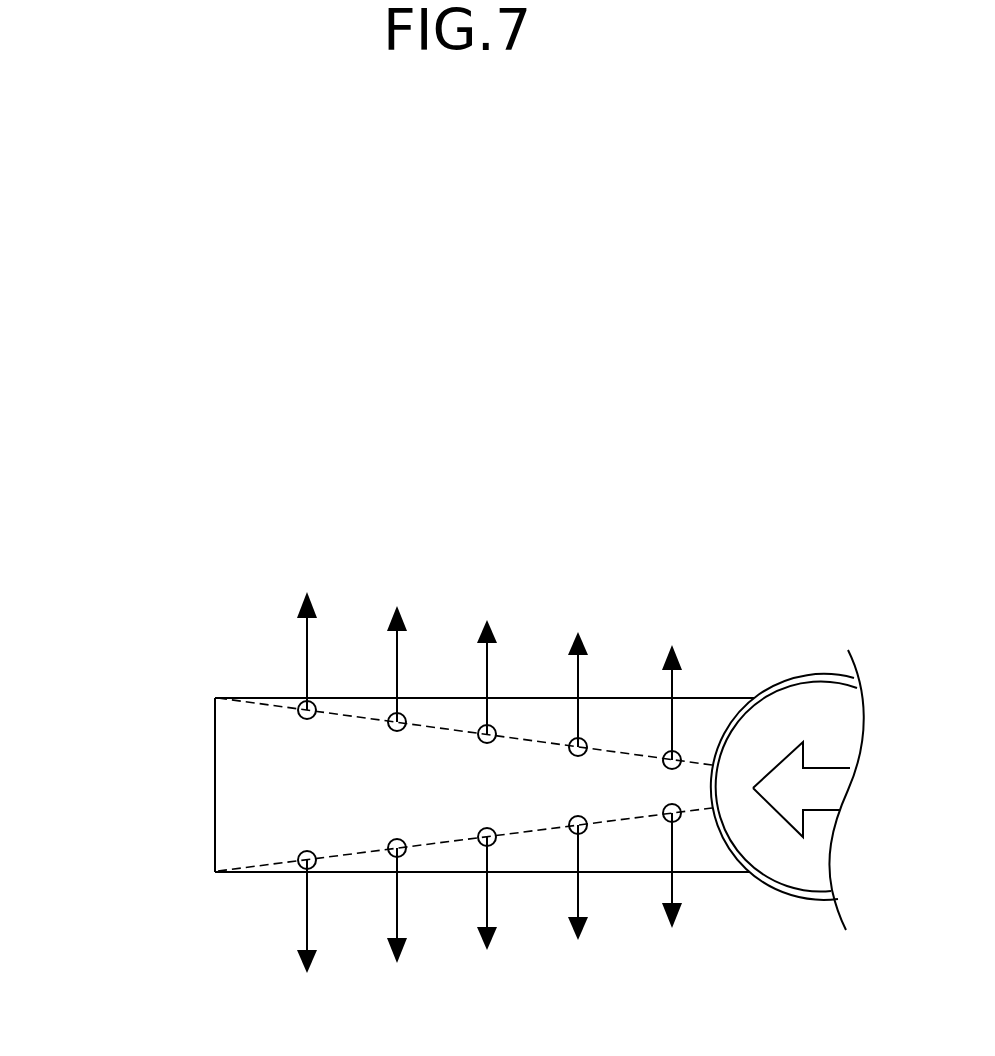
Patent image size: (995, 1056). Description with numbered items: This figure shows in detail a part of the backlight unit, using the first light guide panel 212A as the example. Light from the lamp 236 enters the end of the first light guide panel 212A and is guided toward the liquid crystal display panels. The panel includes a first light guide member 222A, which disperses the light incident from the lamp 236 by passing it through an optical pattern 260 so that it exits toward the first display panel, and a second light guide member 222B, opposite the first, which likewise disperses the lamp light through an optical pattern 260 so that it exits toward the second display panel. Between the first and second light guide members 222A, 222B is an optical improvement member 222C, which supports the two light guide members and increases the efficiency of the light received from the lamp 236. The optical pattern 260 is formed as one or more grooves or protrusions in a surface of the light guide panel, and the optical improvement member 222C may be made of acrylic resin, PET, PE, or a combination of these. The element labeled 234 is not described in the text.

The first light guide panel 212A is at (389, 777).
The first light guide member 222A is at (703, 722).
The second light guide member 222B is at (711, 832).
The optical improvement member 222C is at (247, 807).
The optical pattern 260 is at (300, 861).
The lamp 236 is at (817, 712).
The light source 234 is at (800, 892).